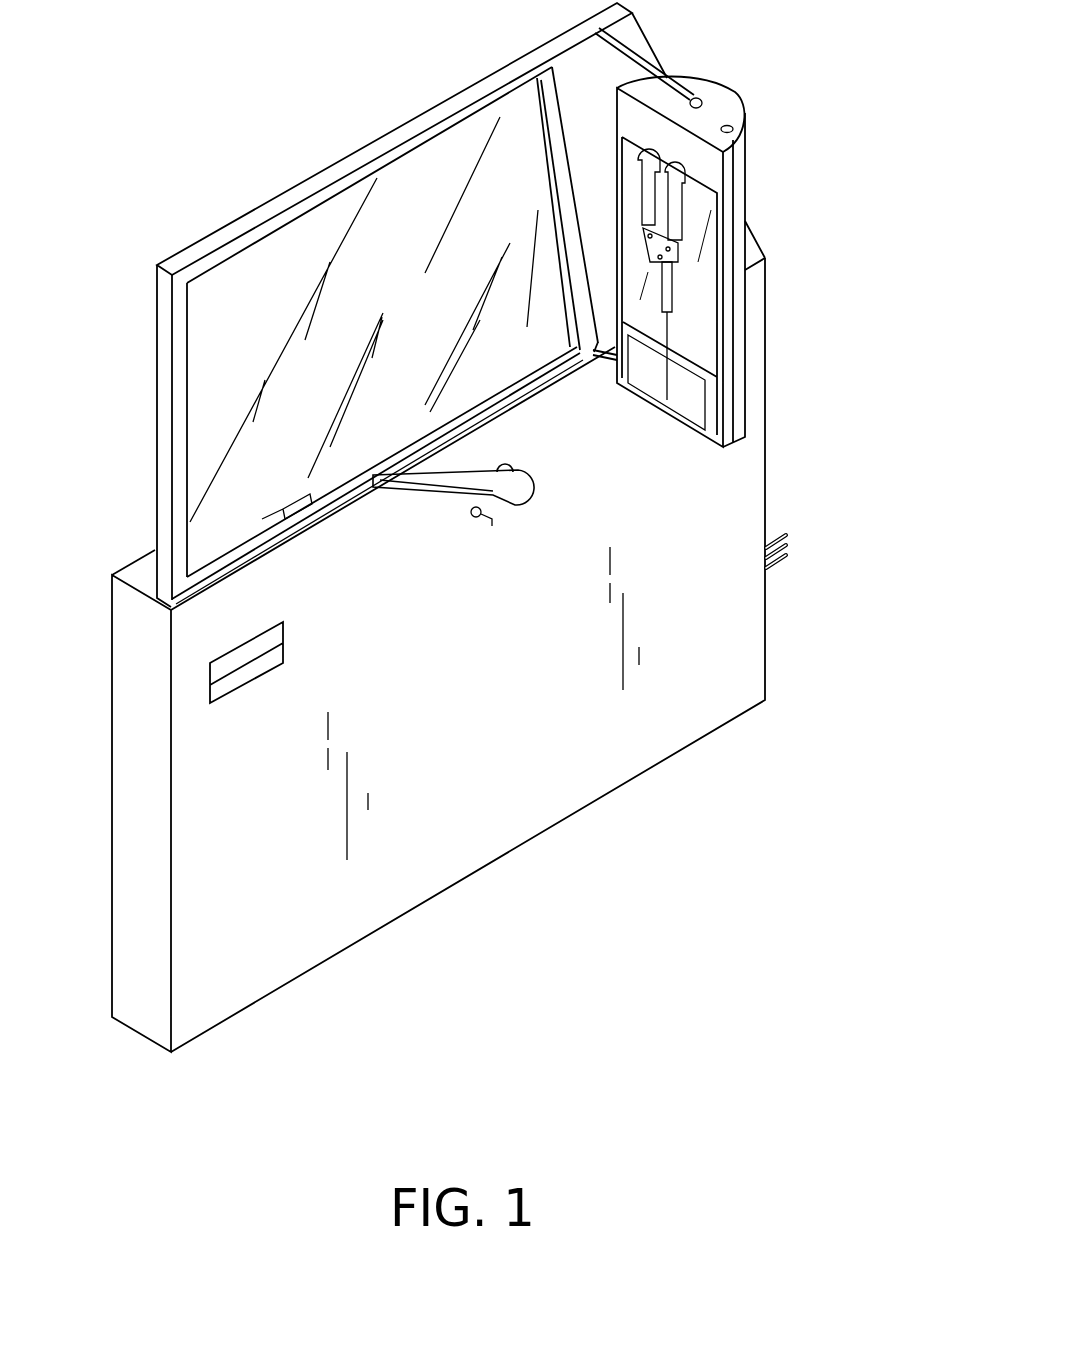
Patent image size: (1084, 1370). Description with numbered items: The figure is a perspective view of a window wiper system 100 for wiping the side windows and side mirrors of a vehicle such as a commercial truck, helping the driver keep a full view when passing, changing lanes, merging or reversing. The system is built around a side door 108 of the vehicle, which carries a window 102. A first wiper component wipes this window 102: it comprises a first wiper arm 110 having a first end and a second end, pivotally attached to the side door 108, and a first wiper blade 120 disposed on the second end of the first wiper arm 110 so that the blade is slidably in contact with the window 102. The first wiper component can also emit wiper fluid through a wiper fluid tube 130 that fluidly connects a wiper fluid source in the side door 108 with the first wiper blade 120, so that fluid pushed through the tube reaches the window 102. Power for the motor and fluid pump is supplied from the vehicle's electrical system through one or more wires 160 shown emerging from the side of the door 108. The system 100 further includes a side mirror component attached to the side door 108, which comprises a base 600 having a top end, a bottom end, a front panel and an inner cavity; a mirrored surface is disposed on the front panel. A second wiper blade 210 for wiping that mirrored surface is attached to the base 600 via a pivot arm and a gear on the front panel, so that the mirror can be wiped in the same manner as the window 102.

The window wiper system 100 is at (508, 611).
The side window 102 is at (388, 225).
The side door 108 is at (275, 862).
The first wiper arm 110 is at (510, 498).
The first wiper blade 120 is at (262, 523).
The wiper fluid tube 130 is at (493, 493).
The wires 160 is at (780, 567).
The second wiper blade 210 is at (668, 333).
The base 600 is at (749, 224).